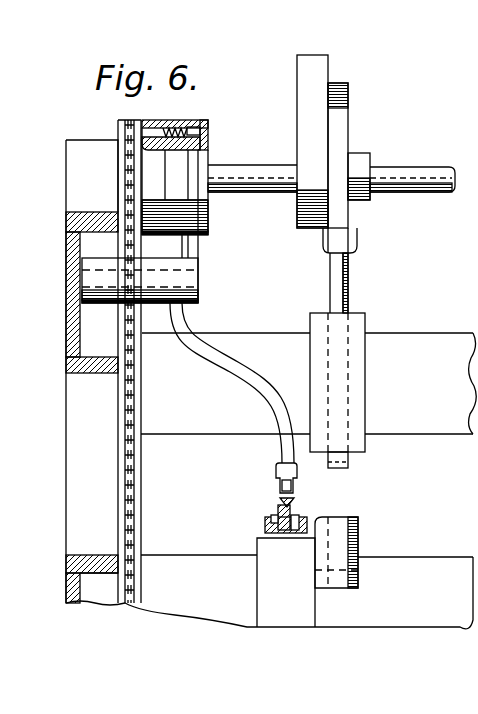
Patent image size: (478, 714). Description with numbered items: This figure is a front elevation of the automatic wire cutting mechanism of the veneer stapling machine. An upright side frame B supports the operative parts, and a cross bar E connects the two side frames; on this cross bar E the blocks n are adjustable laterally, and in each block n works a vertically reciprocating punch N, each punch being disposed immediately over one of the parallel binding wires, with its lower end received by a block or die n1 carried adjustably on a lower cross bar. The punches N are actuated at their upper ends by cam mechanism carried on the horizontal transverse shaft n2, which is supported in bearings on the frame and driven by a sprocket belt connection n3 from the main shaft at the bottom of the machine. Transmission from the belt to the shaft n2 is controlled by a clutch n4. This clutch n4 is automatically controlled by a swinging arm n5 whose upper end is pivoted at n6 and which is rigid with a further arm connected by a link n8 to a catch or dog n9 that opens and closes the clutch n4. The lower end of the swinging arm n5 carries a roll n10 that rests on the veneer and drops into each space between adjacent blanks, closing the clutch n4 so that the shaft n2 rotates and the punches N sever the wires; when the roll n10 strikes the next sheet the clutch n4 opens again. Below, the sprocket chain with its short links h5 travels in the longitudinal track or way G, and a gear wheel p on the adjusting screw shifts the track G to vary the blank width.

The side frame B is at (73, 402).
The sprocket belt connection n3 is at (143, 516).
The clutch n4 is at (172, 177).
The catch or dog n9 is at (196, 210).
The link n8 is at (184, 253).
The pivot n6 is at (195, 283).
The transverse shaft n2 is at (418, 176).
The punch N is at (338, 294).
The block n is at (343, 354).
The cross bar E is at (452, 339).
The swinging arm n5 is at (252, 381).
The roll n10 is at (298, 493).
The track or way G is at (265, 527).
The short link h5 is at (298, 534).
The block or die n1 is at (353, 553).
The gear wheel p is at (175, 566).